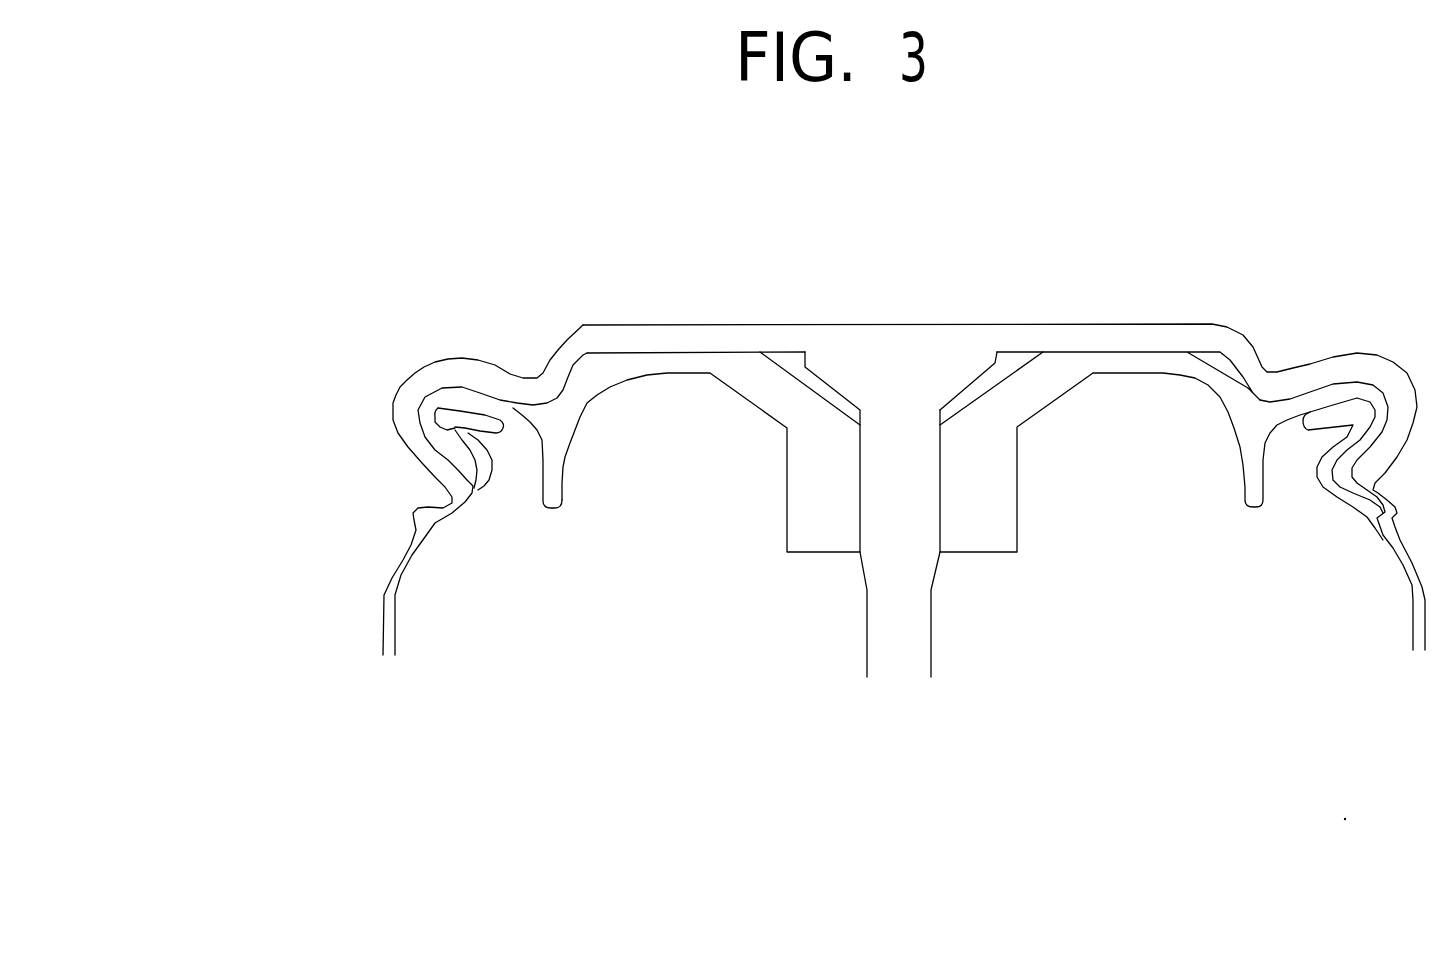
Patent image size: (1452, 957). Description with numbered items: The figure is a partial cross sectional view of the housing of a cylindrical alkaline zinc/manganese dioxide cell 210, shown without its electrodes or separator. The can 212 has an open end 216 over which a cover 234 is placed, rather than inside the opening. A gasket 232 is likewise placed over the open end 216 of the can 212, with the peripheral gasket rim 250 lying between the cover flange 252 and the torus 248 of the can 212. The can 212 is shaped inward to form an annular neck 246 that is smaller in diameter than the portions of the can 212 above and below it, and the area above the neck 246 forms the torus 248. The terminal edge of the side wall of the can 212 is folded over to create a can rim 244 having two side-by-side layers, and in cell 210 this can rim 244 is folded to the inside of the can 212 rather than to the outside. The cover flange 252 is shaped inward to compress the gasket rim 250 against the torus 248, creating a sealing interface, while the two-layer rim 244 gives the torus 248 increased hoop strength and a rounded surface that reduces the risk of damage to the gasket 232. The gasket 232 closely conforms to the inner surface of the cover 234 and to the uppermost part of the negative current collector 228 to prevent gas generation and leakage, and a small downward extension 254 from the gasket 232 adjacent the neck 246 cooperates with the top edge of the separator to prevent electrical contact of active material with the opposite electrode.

The cell 210 is at (333, 272).
The can 212 is at (388, 622).
The open end 216 is at (532, 280).
The negative current collector 228 is at (893, 618).
The gasket 232 is at (518, 412).
The cover 234 is at (698, 342).
The can rim 244 is at (477, 415).
The neck 246 is at (489, 467).
The torus 248 is at (437, 425).
The gasket rim 250 is at (462, 468).
The cover flange 252 is at (420, 438).
The downward extension 254 is at (557, 468).